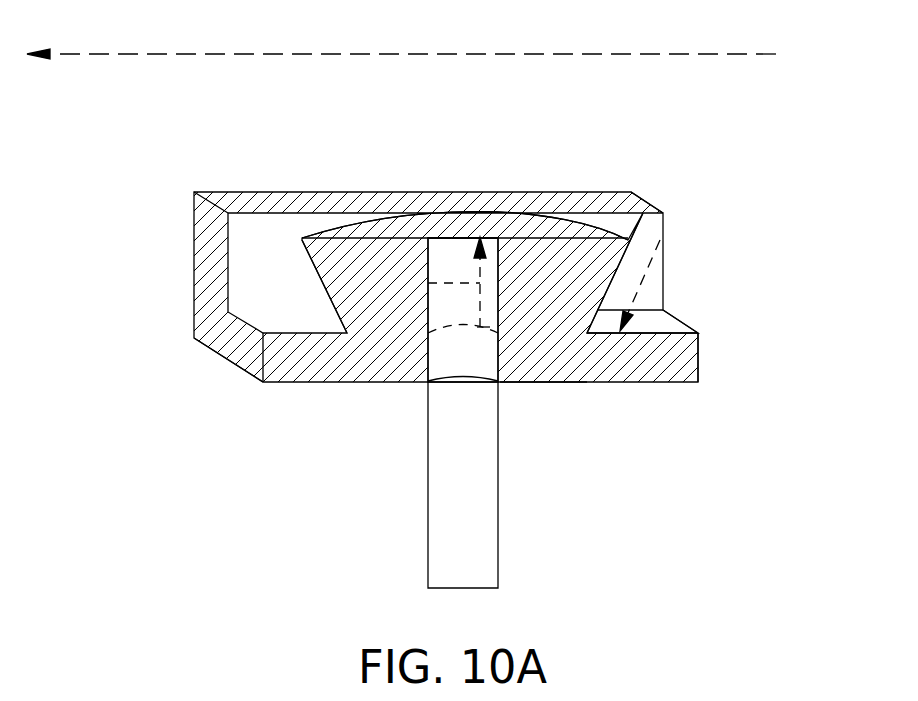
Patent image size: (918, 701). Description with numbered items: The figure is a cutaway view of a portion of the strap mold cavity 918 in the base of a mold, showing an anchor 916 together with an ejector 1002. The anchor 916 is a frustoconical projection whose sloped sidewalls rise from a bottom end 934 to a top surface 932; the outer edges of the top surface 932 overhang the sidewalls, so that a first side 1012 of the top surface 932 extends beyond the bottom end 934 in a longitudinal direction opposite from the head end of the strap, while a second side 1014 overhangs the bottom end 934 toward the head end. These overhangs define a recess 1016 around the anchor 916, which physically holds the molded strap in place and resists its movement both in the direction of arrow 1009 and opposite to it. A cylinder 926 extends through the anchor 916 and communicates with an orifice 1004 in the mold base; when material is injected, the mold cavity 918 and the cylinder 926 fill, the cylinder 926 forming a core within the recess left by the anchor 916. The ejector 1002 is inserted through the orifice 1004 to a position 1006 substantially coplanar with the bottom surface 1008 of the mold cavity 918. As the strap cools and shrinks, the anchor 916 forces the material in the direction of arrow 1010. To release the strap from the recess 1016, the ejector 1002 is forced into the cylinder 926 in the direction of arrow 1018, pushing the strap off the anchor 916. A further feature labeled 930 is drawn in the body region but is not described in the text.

The anchor 916 is at (357, 247).
The strap mold cavity 918 is at (660, 323).
The cylinder 926 is at (447, 248).
The valve body 930 is at (582, 357).
The top surface 932 is at (535, 232).
The bottom end 934 is at (635, 313).
The ejector 1002 is at (443, 462).
The orifice 1004 is at (442, 359).
The position 1006 is at (460, 327).
The bottom surface 1008 is at (592, 312).
The arrow 1009 is at (738, 54).
The arrow 1010 is at (643, 278).
The first side 1012 is at (642, 208).
The second side 1014 is at (303, 242).
The recess 1016 is at (327, 335).
The arrow 1018 is at (428, 284).